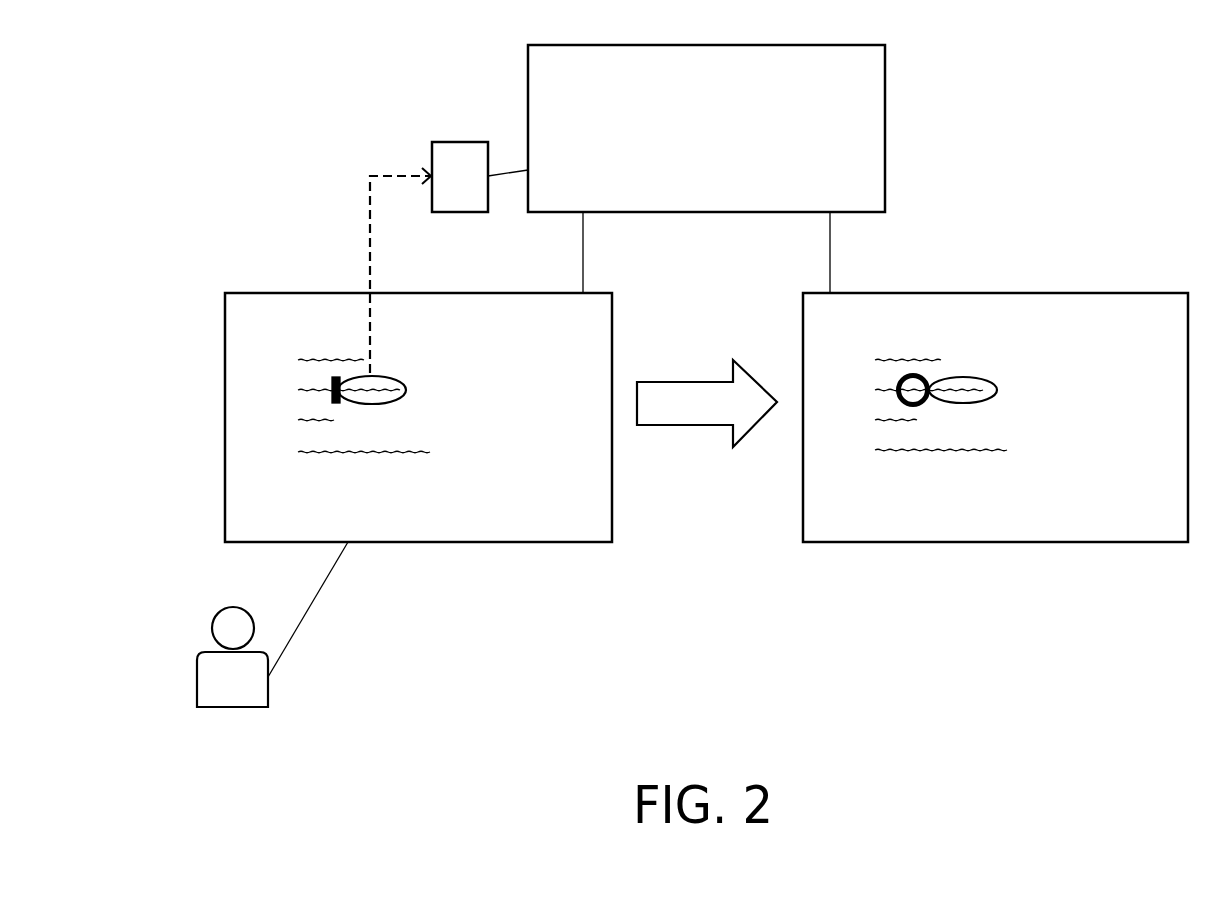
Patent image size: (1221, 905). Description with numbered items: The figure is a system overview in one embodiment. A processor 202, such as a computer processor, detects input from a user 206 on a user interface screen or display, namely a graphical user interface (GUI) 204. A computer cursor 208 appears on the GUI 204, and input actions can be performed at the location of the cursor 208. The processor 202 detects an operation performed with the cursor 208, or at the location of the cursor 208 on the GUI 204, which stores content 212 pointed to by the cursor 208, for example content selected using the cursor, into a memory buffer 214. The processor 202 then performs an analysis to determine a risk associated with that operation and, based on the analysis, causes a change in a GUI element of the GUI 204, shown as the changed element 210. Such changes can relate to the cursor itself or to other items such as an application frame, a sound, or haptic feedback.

The processor 202 is at (528, 128).
The graphical user interface (GUI) 204 is at (295, 293).
The user 206 is at (182, 665).
The computer cursor 208 is at (320, 402).
The change in a GUI element 210 is at (898, 400).
The content 212 is at (393, 375).
The memory buffer 214 is at (460, 142).